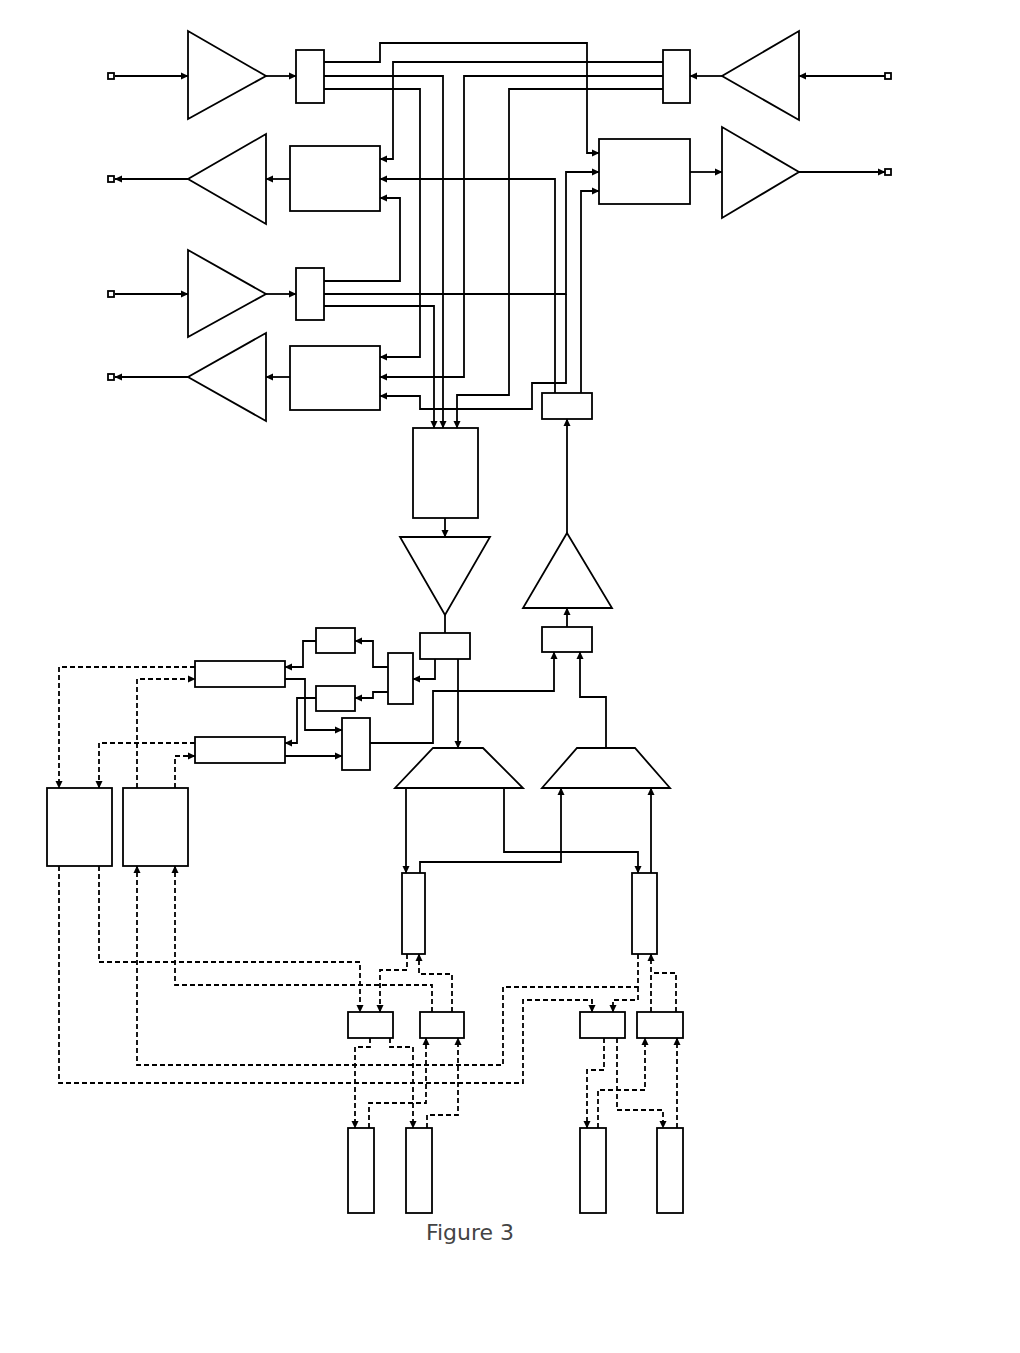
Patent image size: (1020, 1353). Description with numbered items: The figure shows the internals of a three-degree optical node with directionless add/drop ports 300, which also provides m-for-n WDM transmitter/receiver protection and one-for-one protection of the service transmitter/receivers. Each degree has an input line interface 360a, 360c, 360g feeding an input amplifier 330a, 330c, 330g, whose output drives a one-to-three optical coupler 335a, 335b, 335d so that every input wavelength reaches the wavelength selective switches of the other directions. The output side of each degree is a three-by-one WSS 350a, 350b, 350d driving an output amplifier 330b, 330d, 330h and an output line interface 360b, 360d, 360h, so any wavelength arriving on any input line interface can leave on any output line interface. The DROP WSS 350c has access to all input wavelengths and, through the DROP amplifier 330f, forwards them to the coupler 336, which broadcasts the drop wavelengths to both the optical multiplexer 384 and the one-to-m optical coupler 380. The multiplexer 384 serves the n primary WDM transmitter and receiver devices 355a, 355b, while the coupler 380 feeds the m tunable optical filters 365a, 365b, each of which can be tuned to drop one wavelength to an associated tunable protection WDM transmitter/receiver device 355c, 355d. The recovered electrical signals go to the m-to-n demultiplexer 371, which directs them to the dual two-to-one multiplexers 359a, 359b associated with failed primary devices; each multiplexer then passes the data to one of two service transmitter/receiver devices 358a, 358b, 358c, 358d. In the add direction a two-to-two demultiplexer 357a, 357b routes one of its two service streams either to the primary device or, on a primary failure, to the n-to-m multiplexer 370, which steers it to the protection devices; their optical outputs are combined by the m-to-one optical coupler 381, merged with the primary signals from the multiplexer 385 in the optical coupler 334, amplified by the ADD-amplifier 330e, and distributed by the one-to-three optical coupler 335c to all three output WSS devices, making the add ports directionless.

The three-degree optical node with directionless add/drop ports 300 is at (469, 608).
The input amplifier 330a is at (233, 55).
The output amplifier 330b is at (222, 200).
The input amplifier 330c is at (802, 63).
The output amplifier 330d is at (722, 218).
The ADD-amplifier 330e is at (582, 553).
The DROP amplifier 330f is at (487, 540).
The input amplifier 330g is at (233, 273).
The output amplifier 330h is at (221, 399).
The optical coupler 334 is at (593, 650).
The one-to-three optical coupler 335a is at (310, 50).
The one-to-three optical coupler 335b is at (678, 50).
The one-to-three optical coupler 335c is at (593, 401).
The one-to-three optical coupler 335d is at (310, 268).
The coupler 336 is at (458, 632).
The wavelength selective switch 350a is at (335, 178).
The wavelength selective switch 350b is at (644, 171).
The DROP WSS 350c is at (445, 473).
The fourth WSS 350d is at (335, 378).
The primary WDM transmitter and receiver device 355a is at (644, 913).
The primary WDM transmitter and receiver device 355b is at (413, 913).
The tunable protection WDM transmitter/receiver device 355c is at (240, 674).
The tunable protection WDM transmitter/receiver device 355d is at (240, 750).
The two-to-two demultiplexer device 357a is at (696, 1000).
The two-to-two demultiplexer device 357b is at (478, 1000).
The service transmitter/receiver device 358a is at (670, 1170).
The service transmitter/receiver device 358b is at (419, 1170).
The service transmitter/receiver device 358c is at (593, 1170).
The service transmitter/receiver device 358d is at (361, 1170).
The dual two-to-one multiplexer 359a is at (580, 1017).
The dual two-to-one multiplexer 359b is at (348, 1016).
The input line interface 360a is at (116, 72).
The output line interface 360b is at (116, 175).
The input line interface 360c is at (885, 73).
The output line interface 360d is at (885, 170).
The input line interface 360g is at (116, 290).
The output line interface 360h is at (116, 373).
The tunable optical filter 365a is at (328, 626).
The tunable optical filter 365b is at (337, 675).
The n-to-m multiplexer 370 is at (155, 827).
The m-to-n demultiplexer 371 is at (79, 827).
The one-to-m optical coupler 380 is at (403, 707).
The m-to-one optical coupler 381 is at (347, 771).
The optical multiplexer 384 is at (459, 768).
The multiplexer 385 is at (606, 768).